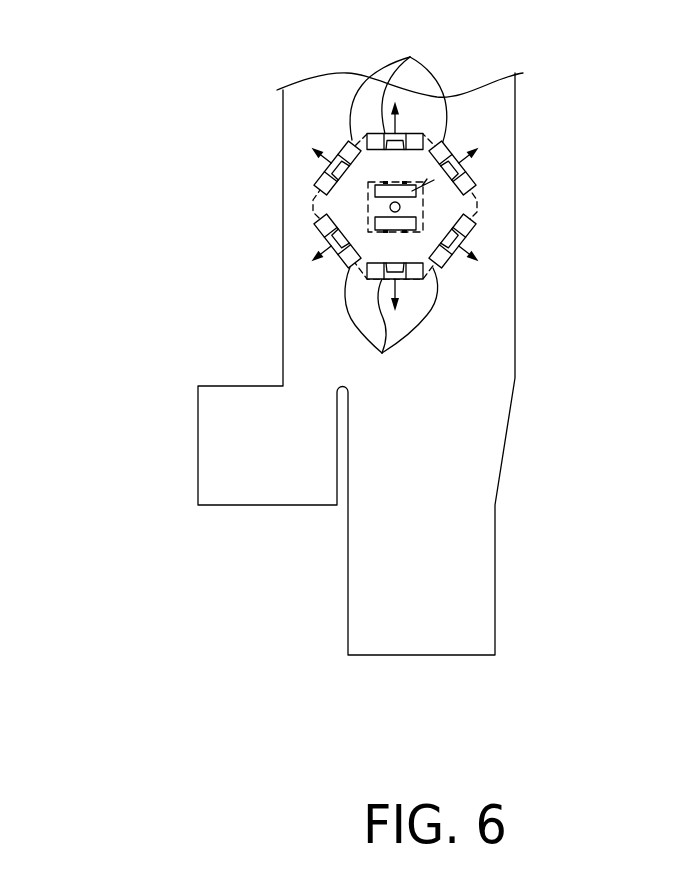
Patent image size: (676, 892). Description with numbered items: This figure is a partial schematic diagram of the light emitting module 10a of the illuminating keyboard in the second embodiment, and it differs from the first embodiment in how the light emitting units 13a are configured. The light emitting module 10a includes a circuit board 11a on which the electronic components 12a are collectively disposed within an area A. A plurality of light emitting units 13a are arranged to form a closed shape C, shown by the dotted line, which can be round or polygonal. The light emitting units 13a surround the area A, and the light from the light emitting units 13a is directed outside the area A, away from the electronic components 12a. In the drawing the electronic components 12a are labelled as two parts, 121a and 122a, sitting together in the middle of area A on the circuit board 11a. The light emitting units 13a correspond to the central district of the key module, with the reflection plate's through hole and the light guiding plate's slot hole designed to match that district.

The light emitting module 10a is at (126, 81).
The circuit board 11a is at (487, 422).
The electronic components 12a is at (394, 207).
The first sensor 121a is at (389, 208).
The second sensor 122a is at (405, 223).
The light emitting units 13a is at (396, 208).
The area A is at (463, 165).
The closed shape C is at (316, 192).